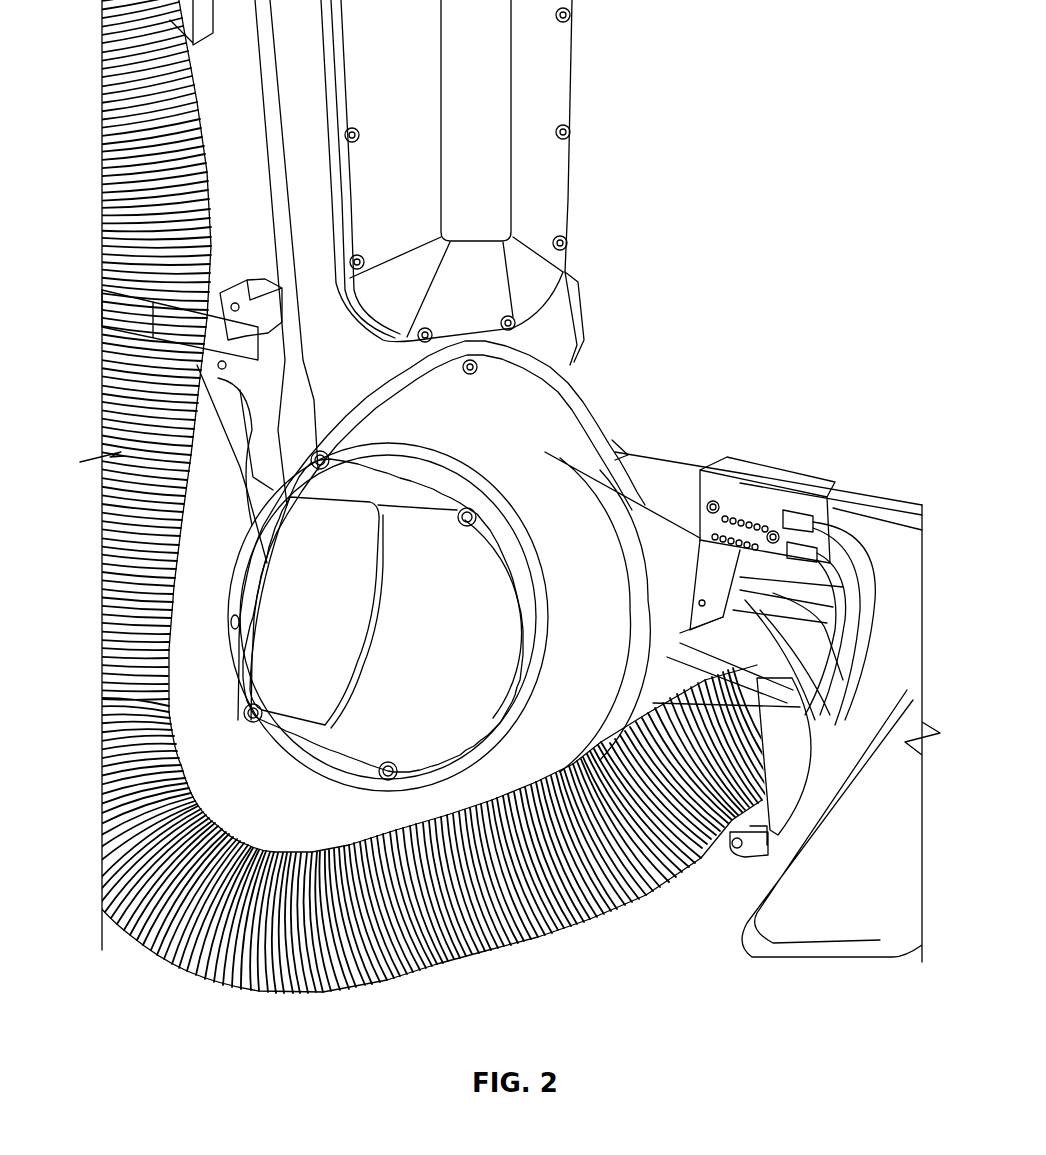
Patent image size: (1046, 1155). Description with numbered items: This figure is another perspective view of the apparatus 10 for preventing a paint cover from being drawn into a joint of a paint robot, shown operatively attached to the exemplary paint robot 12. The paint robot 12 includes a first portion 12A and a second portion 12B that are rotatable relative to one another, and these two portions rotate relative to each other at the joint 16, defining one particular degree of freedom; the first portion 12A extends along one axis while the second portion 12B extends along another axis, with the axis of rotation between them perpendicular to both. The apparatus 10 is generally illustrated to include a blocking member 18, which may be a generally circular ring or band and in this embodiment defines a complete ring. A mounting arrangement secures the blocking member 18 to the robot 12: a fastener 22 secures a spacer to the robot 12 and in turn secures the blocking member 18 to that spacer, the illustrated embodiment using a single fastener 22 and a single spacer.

The apparatus 10 is at (626, 427).
The paint robot 12 is at (576, 118).
The first portion 12A is at (574, 72).
The second portion 12B is at (585, 545).
The joint 16 is at (534, 396).
The blocking member 18 is at (267, 520).
The fastener 22 is at (231, 622).